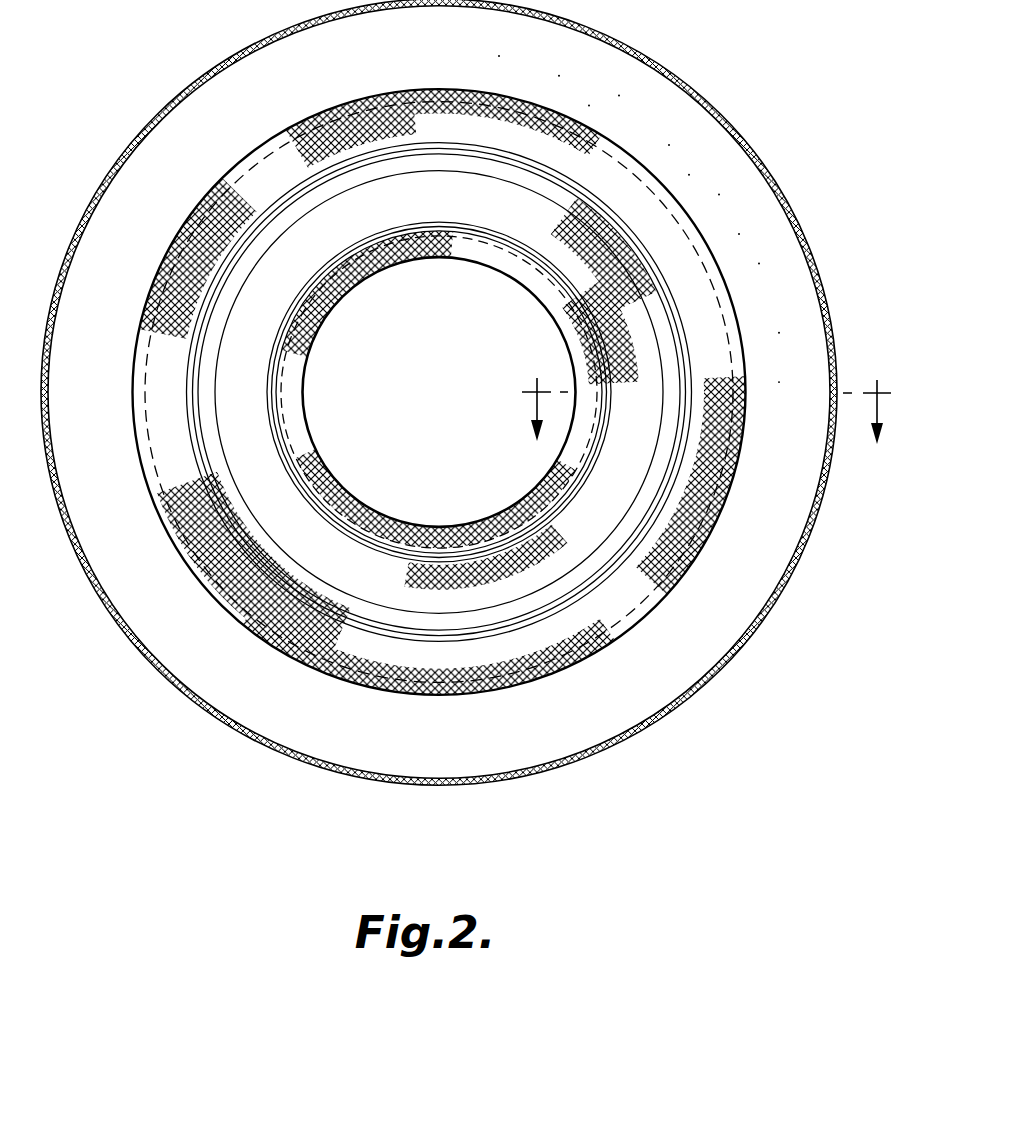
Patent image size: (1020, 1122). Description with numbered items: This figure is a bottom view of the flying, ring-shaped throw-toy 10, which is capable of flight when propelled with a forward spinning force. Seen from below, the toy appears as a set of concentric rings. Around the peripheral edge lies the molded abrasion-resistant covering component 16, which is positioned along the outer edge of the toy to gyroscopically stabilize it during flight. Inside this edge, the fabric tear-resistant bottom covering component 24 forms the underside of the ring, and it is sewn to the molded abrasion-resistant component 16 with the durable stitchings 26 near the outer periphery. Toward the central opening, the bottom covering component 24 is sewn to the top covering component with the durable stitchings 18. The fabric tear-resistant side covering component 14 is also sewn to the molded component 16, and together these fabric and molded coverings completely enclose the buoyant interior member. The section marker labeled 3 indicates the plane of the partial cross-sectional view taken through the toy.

The ring-shaped throw-toy 10 is at (201, 73).
The fabric tear-resistant side covering component 14 is at (794, 203).
The molded abrasion-resistant covering component 16 is at (160, 162).
The durable stitchings 18 is at (496, 246).
The fabric tear-resistant bottom covering component 24 is at (620, 187).
The durable stitchings 26 is at (664, 590).
The section line 3- 3 is at (706, 396).